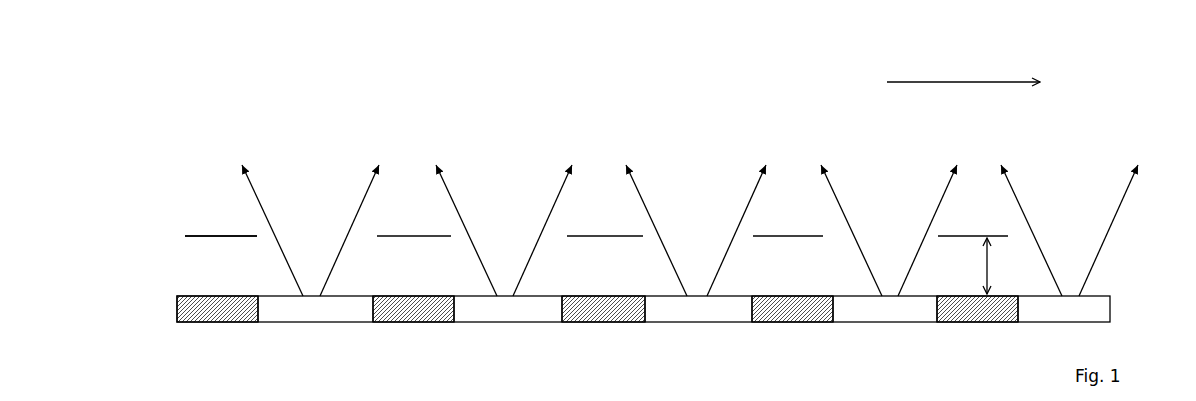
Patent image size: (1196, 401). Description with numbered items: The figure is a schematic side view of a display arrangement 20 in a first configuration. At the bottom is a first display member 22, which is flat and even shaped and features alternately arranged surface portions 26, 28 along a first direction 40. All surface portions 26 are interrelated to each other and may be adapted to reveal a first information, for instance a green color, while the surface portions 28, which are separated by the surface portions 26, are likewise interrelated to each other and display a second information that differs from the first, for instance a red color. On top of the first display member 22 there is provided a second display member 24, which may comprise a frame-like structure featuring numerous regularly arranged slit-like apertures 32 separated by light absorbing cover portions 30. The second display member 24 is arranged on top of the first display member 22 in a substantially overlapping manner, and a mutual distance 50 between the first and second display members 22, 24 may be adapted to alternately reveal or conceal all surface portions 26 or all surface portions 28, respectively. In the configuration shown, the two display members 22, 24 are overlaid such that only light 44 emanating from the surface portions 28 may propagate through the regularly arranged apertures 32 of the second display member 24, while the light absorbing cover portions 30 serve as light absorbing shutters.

The display arrangement 20 is at (220, 110).
The first display member 22 is at (165, 300).
The second display member 24 is at (172, 234).
The surface portions 26 is at (218, 312).
The surface portions 28 is at (308, 312).
The light absorbing cover portions 30 is at (207, 236).
The apertures 32 is at (310, 223).
The first direction 40 is at (923, 83).
The light 44 is at (256, 193).
The mutual distance 50 is at (990, 273).